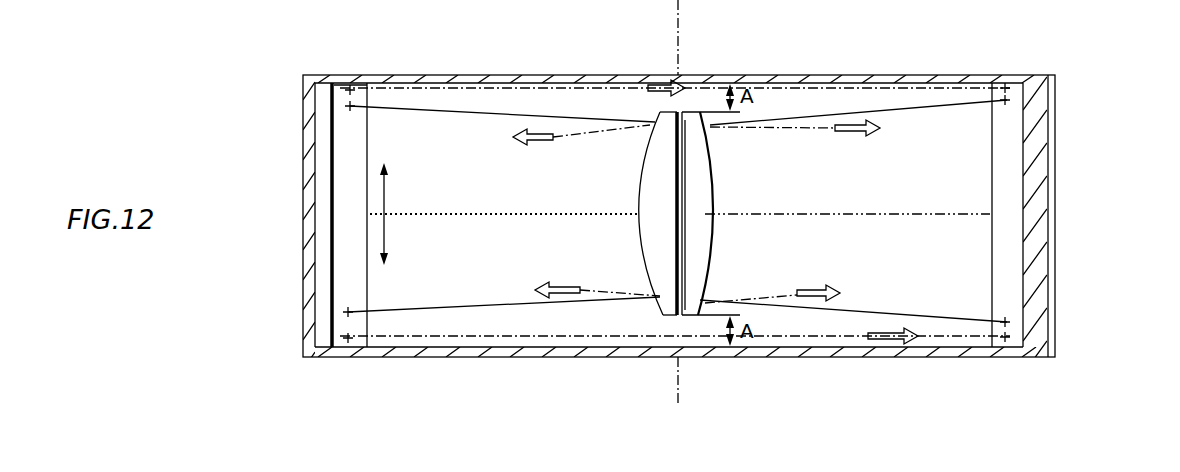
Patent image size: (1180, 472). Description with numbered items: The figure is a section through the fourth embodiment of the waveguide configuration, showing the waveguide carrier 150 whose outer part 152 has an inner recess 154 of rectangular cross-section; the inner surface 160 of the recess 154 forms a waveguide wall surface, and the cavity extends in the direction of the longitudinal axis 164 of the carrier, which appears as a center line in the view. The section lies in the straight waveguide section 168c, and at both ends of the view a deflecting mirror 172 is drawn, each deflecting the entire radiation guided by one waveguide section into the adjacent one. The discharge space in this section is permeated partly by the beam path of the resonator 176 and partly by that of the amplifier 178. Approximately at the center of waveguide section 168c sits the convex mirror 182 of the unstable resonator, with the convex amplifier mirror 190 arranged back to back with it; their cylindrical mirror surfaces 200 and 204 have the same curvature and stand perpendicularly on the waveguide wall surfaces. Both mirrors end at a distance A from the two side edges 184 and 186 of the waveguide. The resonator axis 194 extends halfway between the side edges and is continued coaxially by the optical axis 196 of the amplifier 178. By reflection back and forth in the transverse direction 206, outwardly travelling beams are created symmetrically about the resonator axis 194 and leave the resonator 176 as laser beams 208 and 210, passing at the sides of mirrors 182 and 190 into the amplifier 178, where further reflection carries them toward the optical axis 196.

The waveguide carrier 150 is at (1066, 96).
The outer part 152 is at (1036, 179).
The inner recess 154 is at (1017, 220).
The inner surface 160 is at (940, 272).
The longitudinal axis 164 is at (679, 42).
The waveguide section 168c is at (503, 298).
The deflecting mirror 172 is at (347, 287).
The resonator 176 is at (491, 360).
The amplifier 178 is at (844, 362).
The mirror 182 is at (650, 163).
The side edge 184 is at (613, 88).
The side edge 186 is at (617, 348).
The mirror 190 is at (703, 170).
The resonator axis 194 is at (478, 213).
The optical axis 196 is at (860, 213).
The mirror surface 200 is at (643, 243).
The mirror surface 204 is at (712, 240).
The transverse direction 206 is at (386, 218).
The laser beam 208 is at (530, 92).
The laser beam 210 is at (528, 330).